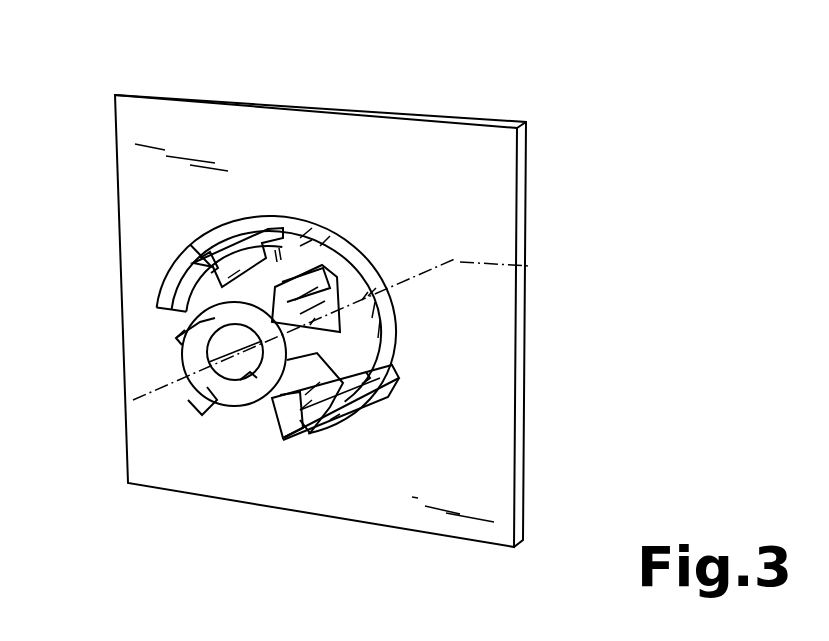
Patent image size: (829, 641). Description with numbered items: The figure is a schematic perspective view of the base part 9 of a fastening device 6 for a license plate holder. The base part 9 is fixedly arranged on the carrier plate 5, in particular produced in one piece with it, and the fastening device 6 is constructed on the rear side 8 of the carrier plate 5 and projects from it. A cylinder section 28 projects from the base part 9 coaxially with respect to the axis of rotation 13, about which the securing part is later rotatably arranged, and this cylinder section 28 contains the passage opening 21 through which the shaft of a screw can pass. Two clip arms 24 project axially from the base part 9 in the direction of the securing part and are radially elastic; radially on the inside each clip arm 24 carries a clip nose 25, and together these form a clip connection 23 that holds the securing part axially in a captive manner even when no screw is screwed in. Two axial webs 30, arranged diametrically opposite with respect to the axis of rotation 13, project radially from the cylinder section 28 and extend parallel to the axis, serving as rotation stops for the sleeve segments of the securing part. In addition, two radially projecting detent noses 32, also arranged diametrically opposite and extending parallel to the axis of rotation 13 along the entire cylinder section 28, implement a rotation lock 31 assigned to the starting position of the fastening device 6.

The carrier plate 5 is at (475, 138).
The fastening device 6 is at (430, 337).
The rear side 8 is at (341, 148).
The base part 9 is at (293, 252).
The axis of rotation 13 is at (530, 266).
The passage opening 21 is at (229, 393).
The clip connection 23 is at (163, 322).
The clip arm 24 is at (200, 252).
The clip nose 25 is at (167, 278).
The cylinder section 28 is at (240, 372).
The axial web 30 is at (300, 245).
The rotation lock 31 is at (372, 389).
The detent nose 32 is at (340, 298).